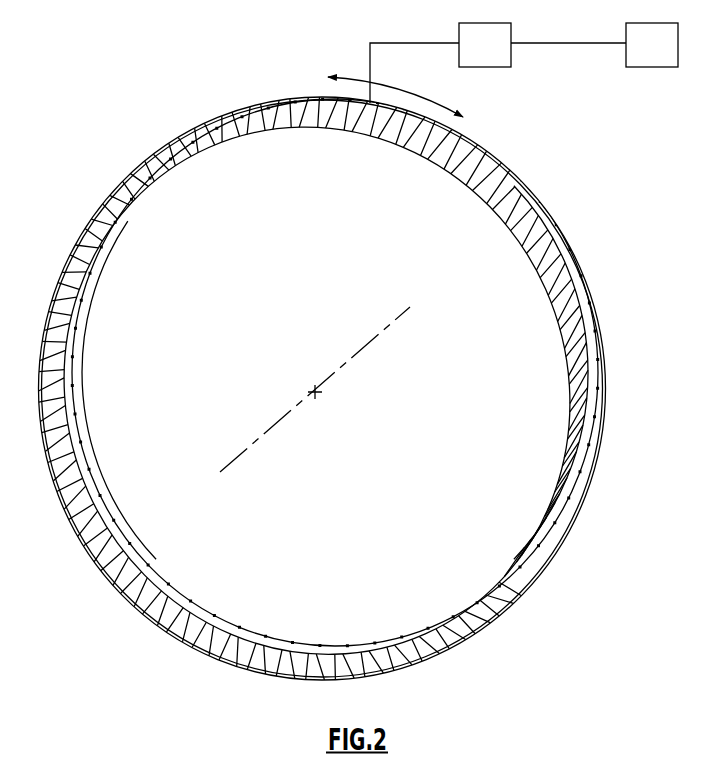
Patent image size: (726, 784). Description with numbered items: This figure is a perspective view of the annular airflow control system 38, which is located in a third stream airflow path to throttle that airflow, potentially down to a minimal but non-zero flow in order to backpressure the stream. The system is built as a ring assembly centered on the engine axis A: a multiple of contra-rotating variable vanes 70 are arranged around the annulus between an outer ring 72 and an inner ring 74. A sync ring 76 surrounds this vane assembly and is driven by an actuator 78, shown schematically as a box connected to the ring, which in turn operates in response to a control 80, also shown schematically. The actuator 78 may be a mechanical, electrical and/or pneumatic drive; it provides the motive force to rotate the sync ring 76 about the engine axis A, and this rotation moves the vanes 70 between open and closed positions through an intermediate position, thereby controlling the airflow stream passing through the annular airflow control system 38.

The annular airflow control system 38 is at (626, 309).
The contra-rotating variable vanes 70 is at (297, 117).
The outer ring 72 is at (283, 106).
The inner ring 74 is at (257, 133).
The sync ring 76 is at (505, 176).
The actuator 78 is at (496, 61).
The control 80 is at (663, 61).
The engine axis A is at (358, 352).